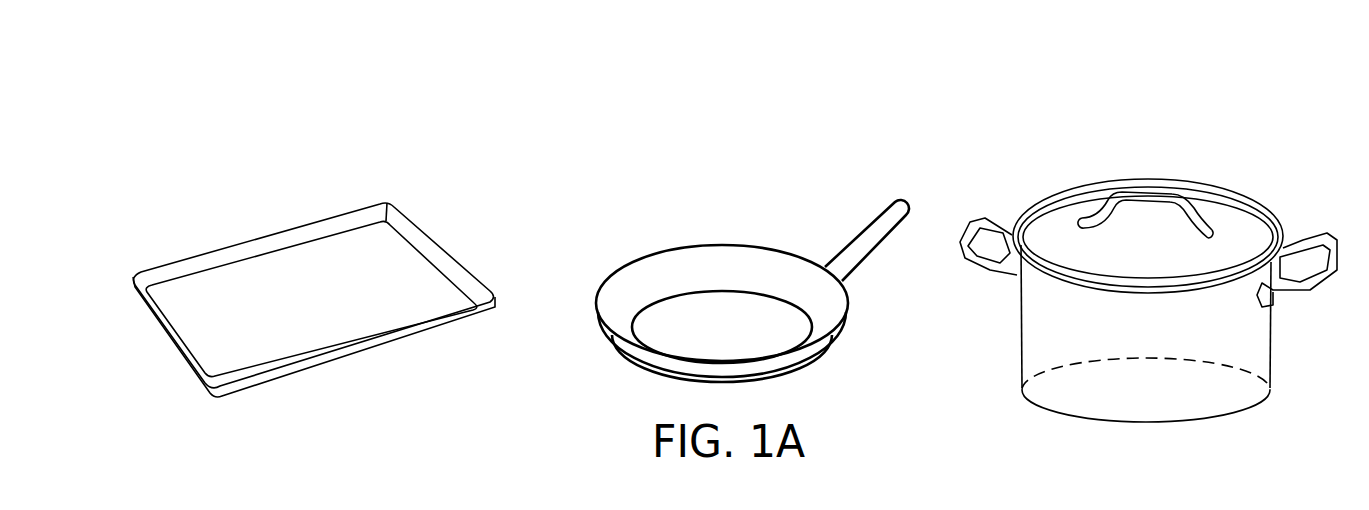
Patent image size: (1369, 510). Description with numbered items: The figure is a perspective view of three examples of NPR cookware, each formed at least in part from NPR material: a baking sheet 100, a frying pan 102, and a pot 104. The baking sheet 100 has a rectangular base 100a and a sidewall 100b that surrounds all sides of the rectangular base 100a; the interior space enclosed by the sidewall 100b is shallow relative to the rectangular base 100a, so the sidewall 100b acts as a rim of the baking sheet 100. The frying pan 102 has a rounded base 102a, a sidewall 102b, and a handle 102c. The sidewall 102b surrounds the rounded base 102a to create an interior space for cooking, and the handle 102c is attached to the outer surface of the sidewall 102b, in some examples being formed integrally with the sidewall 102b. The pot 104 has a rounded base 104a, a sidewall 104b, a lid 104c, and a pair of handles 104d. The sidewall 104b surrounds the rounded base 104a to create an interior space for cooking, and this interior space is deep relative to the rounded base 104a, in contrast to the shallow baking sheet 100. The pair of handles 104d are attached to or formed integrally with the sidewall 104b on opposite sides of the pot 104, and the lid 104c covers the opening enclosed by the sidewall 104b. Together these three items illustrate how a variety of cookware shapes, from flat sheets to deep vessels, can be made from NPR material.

The baking sheet 100 is at (237, 81).
The rectangular base 100a is at (304, 268).
The sidewall 100b is at (427, 243).
The frying pan 102 is at (664, 79).
The rounded base 102a is at (672, 325).
The sidewall 102b is at (747, 262).
The handle 102c is at (859, 220).
The pot 104 is at (1077, 79).
The rounded base 104a is at (1099, 389).
The sidewall 104b is at (1271, 338).
The lid 104c is at (1213, 216).
The pair of handles 104d is at (1309, 231).